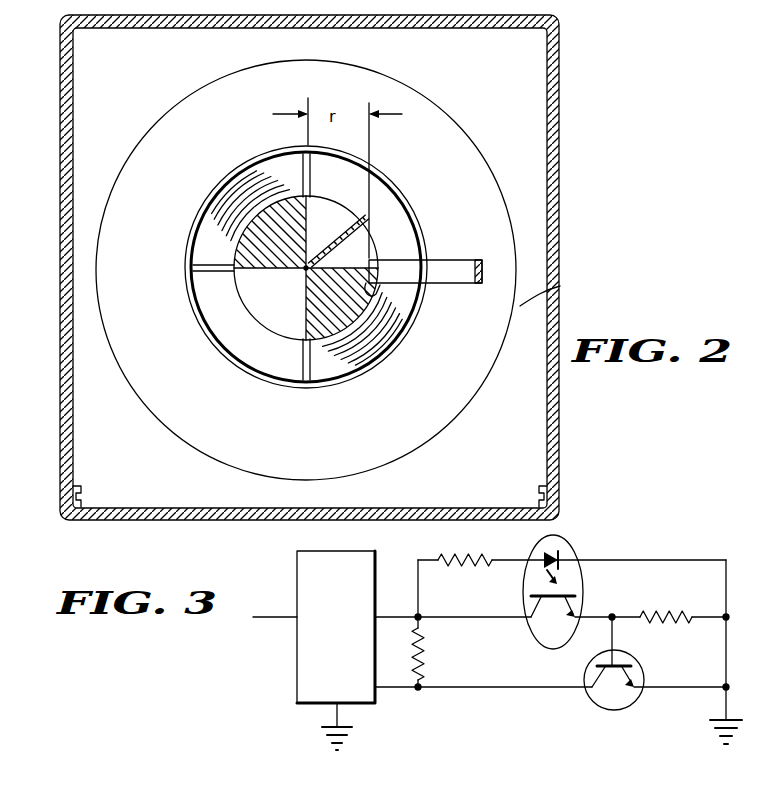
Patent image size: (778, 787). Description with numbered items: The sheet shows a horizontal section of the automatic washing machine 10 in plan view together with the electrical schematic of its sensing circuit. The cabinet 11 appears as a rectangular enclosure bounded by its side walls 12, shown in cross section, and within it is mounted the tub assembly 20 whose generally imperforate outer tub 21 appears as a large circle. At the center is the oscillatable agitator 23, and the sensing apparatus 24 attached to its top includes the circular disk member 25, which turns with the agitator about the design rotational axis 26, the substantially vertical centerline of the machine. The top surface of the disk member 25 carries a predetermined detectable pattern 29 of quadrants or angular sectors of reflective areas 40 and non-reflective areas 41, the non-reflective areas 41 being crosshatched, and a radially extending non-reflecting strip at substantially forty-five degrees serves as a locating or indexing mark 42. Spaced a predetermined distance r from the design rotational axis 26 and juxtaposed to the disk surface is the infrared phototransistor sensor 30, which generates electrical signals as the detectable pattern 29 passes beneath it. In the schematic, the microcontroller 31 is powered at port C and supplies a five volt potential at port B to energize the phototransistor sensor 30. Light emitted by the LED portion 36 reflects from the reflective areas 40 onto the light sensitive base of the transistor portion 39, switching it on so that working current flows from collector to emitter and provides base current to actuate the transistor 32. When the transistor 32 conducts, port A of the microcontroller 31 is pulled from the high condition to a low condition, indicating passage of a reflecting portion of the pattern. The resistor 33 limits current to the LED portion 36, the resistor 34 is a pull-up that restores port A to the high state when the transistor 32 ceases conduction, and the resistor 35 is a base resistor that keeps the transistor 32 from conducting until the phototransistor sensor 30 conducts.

In FIG. 2, the automatic washing machine 10 is at (340, 287).
In FIG. 2, the cabinet 11 is at (44, 495).
In FIG. 2, the side walls 12 is at (61, 140).
In FIG. 2, the tub assembly 20 is at (437, 86).
In FIG. 2, the outer tub 21 is at (560, 286).
In FIG. 2, the agitator 23 is at (283, 372).
In FIG. 2, the sensing apparatus 24 is at (468, 238).
In FIG. 2, the disk member 25 is at (240, 228).
In FIG. 2, the design rotational axis 26 is at (306, 270).
In FIG. 2, the detectable pattern 29 is at (238, 345).
In FIG. 2, the phototransistor sensor 30 is at (402, 296).
In FIG. 3, the phototransistor sensor 30 is at (571, 590).
In FIG. 3, the microcontroller 31 is at (296, 556).
In FIG. 3, the transistor 32 is at (612, 693).
In FIG. 3, the resistor 33 is at (460, 566).
In FIG. 3, the resistor 34 is at (425, 654).
In FIG. 3, the resistor 35 is at (662, 623).
In FIG. 3, the LED portion 36 is at (560, 538).
In FIG. 3, the transistor portion 39 is at (548, 632).
In FIG. 2, the reflective areas 40 is at (350, 192).
In FIG. 2, the non-reflective areas 41 is at (282, 218).
In FIG. 2, the indexing mark 42 is at (340, 226).